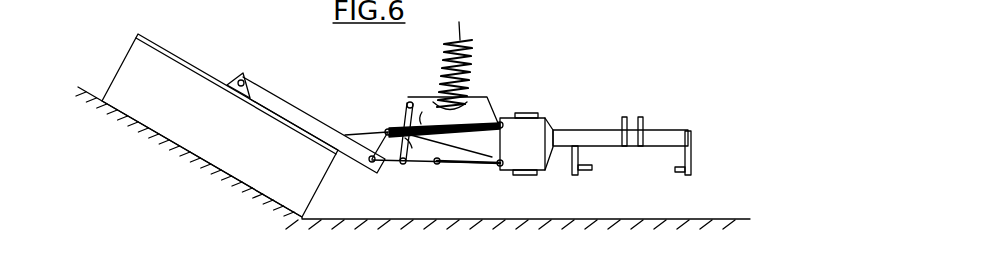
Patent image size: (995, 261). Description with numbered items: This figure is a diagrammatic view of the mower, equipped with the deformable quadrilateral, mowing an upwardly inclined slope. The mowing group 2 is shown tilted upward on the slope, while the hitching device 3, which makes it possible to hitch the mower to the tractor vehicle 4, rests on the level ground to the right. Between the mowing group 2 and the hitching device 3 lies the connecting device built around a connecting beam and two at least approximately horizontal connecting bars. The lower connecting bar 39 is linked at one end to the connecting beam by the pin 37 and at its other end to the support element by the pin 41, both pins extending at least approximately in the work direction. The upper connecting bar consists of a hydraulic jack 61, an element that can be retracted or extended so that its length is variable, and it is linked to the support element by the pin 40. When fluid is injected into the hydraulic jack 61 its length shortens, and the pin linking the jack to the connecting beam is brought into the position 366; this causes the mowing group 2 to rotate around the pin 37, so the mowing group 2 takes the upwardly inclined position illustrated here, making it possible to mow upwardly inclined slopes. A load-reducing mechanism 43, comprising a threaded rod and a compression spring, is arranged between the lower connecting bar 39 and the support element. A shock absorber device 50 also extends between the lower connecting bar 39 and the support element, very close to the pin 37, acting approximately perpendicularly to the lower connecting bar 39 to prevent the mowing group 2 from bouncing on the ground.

The mowing group 2 is at (119, 68).
The hitching device 3 is at (668, 130).
The tractor vehicle 4 is at (297, 108).
The position of pin 366 is at (386, 129).
The pin 37 is at (370, 163).
The lower connecting bar 39 is at (457, 164).
The pin 40 is at (503, 123).
The pin 41 is at (503, 167).
The load-reducing mechanism 43 is at (449, 57).
The shock absorber device 50 is at (415, 164).
The hydraulic jack 61 is at (478, 114).